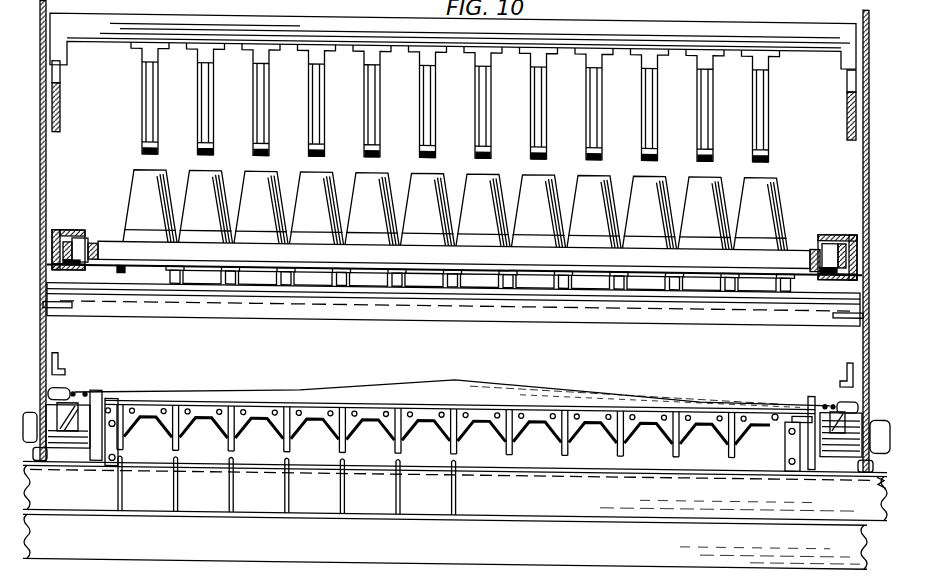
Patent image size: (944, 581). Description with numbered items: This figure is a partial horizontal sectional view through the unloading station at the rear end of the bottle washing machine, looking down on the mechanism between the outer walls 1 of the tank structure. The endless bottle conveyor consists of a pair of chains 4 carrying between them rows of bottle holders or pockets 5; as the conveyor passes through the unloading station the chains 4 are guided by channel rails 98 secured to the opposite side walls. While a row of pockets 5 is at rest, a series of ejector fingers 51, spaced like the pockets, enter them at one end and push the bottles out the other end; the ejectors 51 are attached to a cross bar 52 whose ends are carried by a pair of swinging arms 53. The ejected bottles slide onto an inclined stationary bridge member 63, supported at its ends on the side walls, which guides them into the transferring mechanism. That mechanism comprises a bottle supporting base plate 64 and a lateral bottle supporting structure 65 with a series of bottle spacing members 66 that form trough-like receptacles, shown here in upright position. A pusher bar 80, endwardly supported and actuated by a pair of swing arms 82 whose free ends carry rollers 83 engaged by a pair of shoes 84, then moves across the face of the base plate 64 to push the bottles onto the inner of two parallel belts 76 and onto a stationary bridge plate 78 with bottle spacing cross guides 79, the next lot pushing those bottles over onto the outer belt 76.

The outer walls of tank structure 1 is at (47, 166).
The chains 4 is at (93, 236).
The bottle holders or pockets 5 is at (440, 270).
The ejector fingers 51 is at (213, 124).
The cross bar 52 is at (103, 39).
The swinging arms 53 is at (60, 109).
The bridge member 63 is at (625, 310).
The base plate 64 is at (700, 431).
The lateral bottle supporting structure 65 is at (480, 399).
The bottle spacing members 66 is at (570, 435).
The belts 76 is at (515, 515).
The bridge plate 78 is at (325, 498).
The bottle spacing cross guides 79 is at (227, 496).
The pusher bar 80 is at (143, 390).
The swing arms 82 is at (68, 414).
The rollers 83 is at (60, 391).
The shoes 84 is at (65, 374).
The channel rails 98 is at (60, 228).